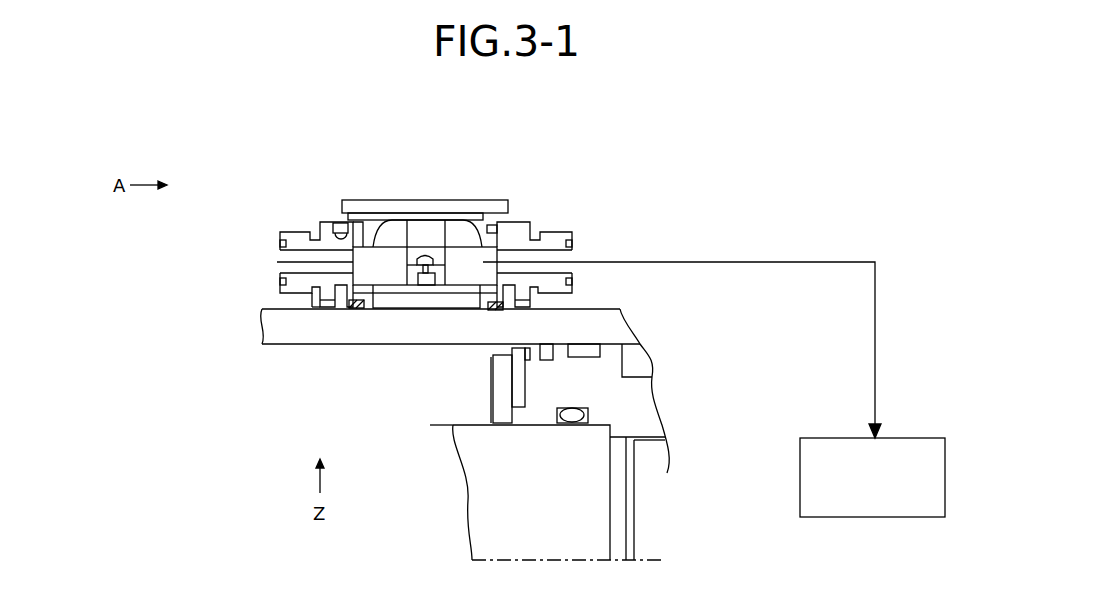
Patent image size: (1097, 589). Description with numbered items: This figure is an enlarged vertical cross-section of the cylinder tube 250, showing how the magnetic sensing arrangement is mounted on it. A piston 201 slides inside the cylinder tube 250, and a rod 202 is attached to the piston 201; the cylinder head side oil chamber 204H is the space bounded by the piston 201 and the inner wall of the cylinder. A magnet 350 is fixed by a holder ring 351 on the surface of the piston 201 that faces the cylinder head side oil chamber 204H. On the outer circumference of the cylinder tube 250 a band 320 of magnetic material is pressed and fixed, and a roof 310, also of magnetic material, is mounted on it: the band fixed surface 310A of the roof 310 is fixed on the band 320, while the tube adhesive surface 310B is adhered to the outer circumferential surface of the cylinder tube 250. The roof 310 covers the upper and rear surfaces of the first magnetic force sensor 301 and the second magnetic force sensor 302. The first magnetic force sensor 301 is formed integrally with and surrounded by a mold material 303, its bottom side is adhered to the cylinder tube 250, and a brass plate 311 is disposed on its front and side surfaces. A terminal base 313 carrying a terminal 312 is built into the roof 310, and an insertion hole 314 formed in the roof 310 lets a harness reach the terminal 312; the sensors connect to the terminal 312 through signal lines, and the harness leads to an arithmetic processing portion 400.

The piston 201 is at (607, 388).
The rod 202 is at (602, 482).
The cylinder head side oil chamber 204H is at (344, 418).
The cylinder tube 250 is at (607, 325).
The first magnetic force sensor 301 is at (353, 310).
The second magnetic force sensor 302 is at (497, 309).
The mold material 303 is at (337, 310).
The roof 310 is at (517, 233).
The band fixed surface 310A is at (403, 295).
The tube adhesive surface 310B is at (362, 310).
The brass plate 311 is at (322, 305).
The terminal 312 is at (425, 253).
The terminal base 313 is at (438, 272).
The insertion hole 314 is at (662, 192).
The band 320 is at (468, 293).
The magnet 350 is at (517, 400).
The holder ring 351 is at (500, 387).
The arithmetic processing portion 400 is at (893, 438).